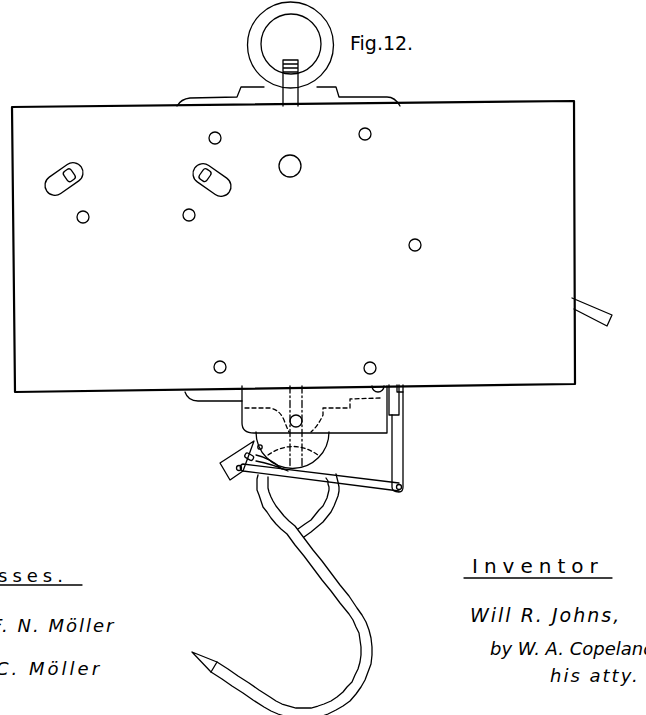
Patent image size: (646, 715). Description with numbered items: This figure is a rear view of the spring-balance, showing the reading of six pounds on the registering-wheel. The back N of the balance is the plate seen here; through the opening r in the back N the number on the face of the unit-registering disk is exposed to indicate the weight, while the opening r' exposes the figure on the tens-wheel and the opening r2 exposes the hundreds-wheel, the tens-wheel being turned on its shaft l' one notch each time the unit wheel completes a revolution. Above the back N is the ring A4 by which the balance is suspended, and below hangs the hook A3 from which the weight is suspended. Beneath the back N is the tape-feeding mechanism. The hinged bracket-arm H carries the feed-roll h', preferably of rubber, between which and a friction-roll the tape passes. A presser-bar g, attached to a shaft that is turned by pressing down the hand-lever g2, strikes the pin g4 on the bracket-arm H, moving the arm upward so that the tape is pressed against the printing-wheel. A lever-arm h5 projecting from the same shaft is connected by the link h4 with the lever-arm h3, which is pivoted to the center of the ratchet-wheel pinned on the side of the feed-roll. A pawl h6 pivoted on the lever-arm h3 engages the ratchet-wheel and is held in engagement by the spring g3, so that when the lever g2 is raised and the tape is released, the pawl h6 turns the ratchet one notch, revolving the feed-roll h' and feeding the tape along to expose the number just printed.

The back N is at (520, 80).
The ring A4 is at (255, 32).
The opening r2 is at (52, 178).
The opening r' is at (220, 180).
The opening r is at (302, 165).
The shaft l' is at (189, 228).
The lever g2 is at (586, 309).
The hook A3 is at (333, 582).
The bracket-arm H is at (243, 420).
The feed-roll h' is at (306, 450).
The presser-bar g is at (395, 407).
The lever-arm h5 is at (401, 447).
The pin g4 is at (403, 390).
The link h4 is at (370, 485).
The lever-arm h3 is at (228, 477).
The spring g3 is at (224, 462).
The pawl h6 is at (250, 456).